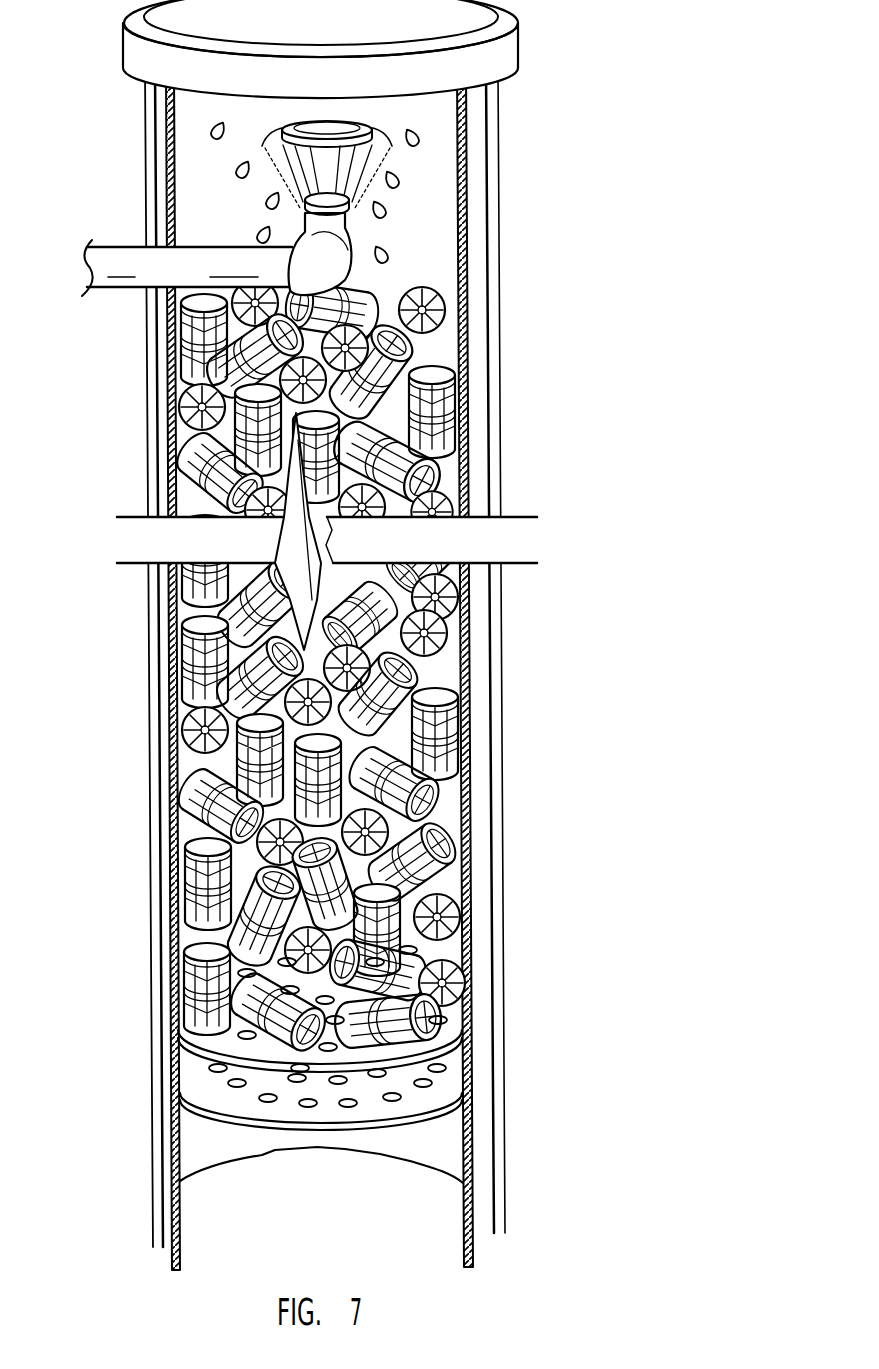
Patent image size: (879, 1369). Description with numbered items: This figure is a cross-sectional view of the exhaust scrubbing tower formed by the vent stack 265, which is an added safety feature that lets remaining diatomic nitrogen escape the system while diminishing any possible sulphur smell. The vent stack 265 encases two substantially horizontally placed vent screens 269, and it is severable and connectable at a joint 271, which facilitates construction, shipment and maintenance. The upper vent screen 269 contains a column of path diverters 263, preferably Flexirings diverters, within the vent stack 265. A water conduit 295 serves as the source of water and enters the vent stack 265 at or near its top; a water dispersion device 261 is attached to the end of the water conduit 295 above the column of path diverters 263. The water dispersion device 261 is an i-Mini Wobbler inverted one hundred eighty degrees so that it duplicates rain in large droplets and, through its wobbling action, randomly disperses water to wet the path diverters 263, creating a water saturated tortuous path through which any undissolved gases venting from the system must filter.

The water dispersion device 261 is at (375, 133).
The path diverters 263 is at (180, 463).
The vent stack 265 is at (468, 665).
The vent screens 269 is at (453, 1023).
The joint 271 is at (468, 1072).
The water conduit 295 is at (112, 250).